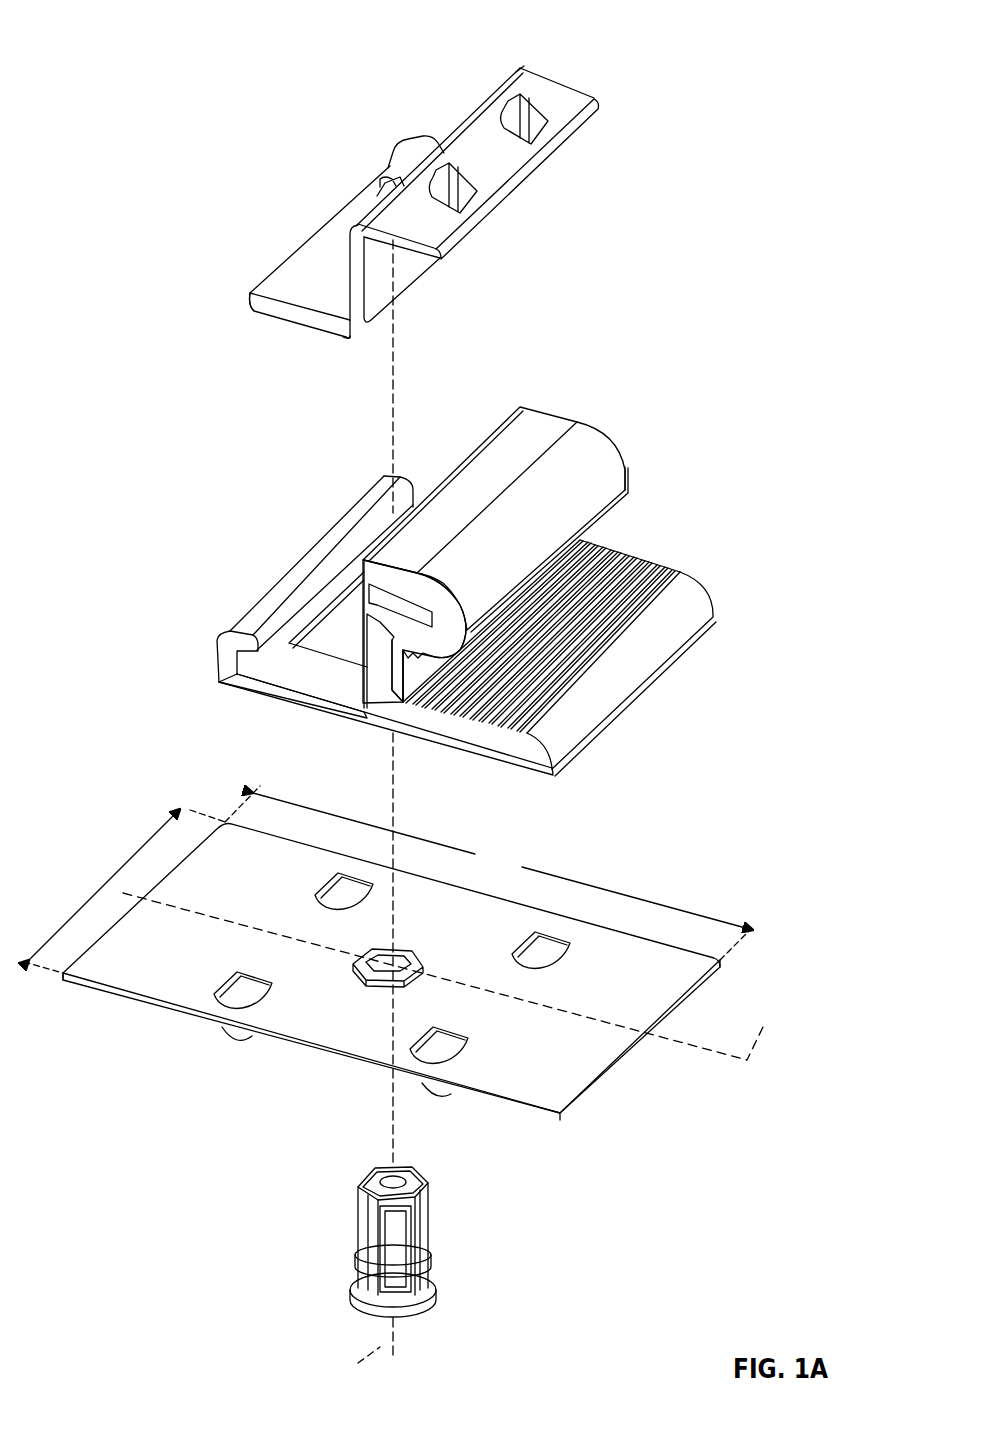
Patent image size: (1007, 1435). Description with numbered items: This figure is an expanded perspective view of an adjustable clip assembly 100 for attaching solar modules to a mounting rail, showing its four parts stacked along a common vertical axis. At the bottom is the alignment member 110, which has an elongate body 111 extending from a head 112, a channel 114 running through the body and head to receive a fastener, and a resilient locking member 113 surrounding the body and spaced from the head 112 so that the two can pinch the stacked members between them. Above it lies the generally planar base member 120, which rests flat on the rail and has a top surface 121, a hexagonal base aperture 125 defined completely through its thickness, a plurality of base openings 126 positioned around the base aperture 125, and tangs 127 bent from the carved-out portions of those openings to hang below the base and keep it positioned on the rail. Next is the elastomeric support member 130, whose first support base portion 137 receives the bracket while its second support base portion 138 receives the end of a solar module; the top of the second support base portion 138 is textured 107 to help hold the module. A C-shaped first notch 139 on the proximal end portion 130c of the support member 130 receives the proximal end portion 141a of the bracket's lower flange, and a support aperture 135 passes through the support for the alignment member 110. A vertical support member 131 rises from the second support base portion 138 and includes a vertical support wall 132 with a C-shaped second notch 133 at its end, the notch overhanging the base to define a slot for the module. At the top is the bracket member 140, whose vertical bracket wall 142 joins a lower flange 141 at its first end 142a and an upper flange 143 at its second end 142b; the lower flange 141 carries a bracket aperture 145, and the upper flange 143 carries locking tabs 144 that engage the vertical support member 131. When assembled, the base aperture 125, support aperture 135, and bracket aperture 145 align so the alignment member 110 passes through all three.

The adjustable clip assembly 100 is at (172, 30).
The bracket member 140 is at (664, 46).
The lower flange 141 is at (321, 292).
The proximal end portion of the lower flange 141a is at (247, 294).
The vertical bracket wall 142 is at (378, 279).
The first end of vertical bracket wall 142a is at (347, 323).
The second end of vertical bracket wall 142b is at (522, 76).
The upper flange 143 is at (508, 172).
The locking tab 144 is at (530, 113).
The bracket aperture 145 is at (390, 162).
The elastomeric support member 130 is at (698, 392).
The vertical support member 131 is at (665, 438).
The second notch 133 is at (384, 609).
The textured top surface 107 is at (648, 563).
The first notch 139 is at (234, 627).
The proximal end portion of the elastomeric support member 130c is at (223, 670).
The support aperture 135 is at (320, 618).
The first support base portion 137 is at (316, 699).
The vertical support wall 132 is at (380, 672).
The second support base portion 138 is at (525, 748).
The base member 120 is at (698, 853).
The top surface 121 is at (671, 993).
The base aperture 125 is at (370, 972).
The base openings 126 is at (333, 887).
The tangs 127 is at (225, 1031).
The alignment member 110 is at (573, 1188).
The elongate body 111 is at (421, 1213).
The head 112 is at (438, 1297).
The resilient locking member 113 is at (432, 1255).
The channel 114 is at (405, 1166).